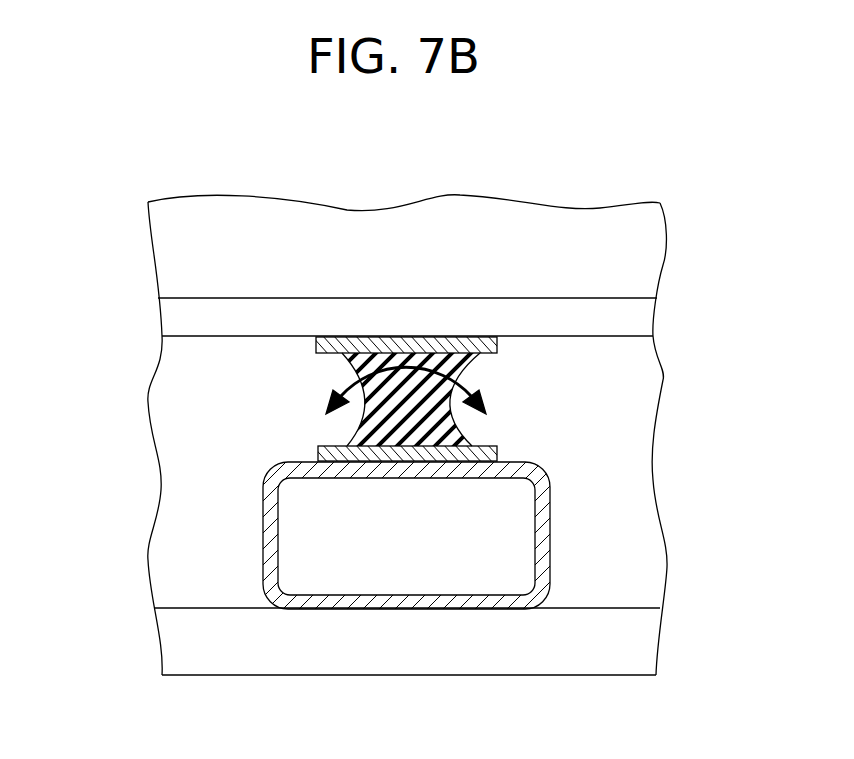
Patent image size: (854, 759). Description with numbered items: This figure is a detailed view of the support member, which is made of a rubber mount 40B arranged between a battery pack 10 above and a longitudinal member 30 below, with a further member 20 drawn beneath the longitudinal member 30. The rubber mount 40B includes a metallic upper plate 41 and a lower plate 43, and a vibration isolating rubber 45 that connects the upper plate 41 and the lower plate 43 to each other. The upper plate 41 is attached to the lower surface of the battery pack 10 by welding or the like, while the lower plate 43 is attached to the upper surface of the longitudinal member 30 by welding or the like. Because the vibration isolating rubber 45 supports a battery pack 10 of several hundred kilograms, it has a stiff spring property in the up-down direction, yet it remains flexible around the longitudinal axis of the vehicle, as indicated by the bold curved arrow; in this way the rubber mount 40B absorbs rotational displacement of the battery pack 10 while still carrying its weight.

The battery pack 10 is at (288, 250).
The second plate member 20 is at (223, 637).
The longitudinal member 30 is at (430, 611).
The rubber mount 40B is at (350, 442).
The upper plate 41 is at (455, 337).
The lower plate 43 is at (433, 478).
The vibration isolating rubber 45 is at (423, 410).